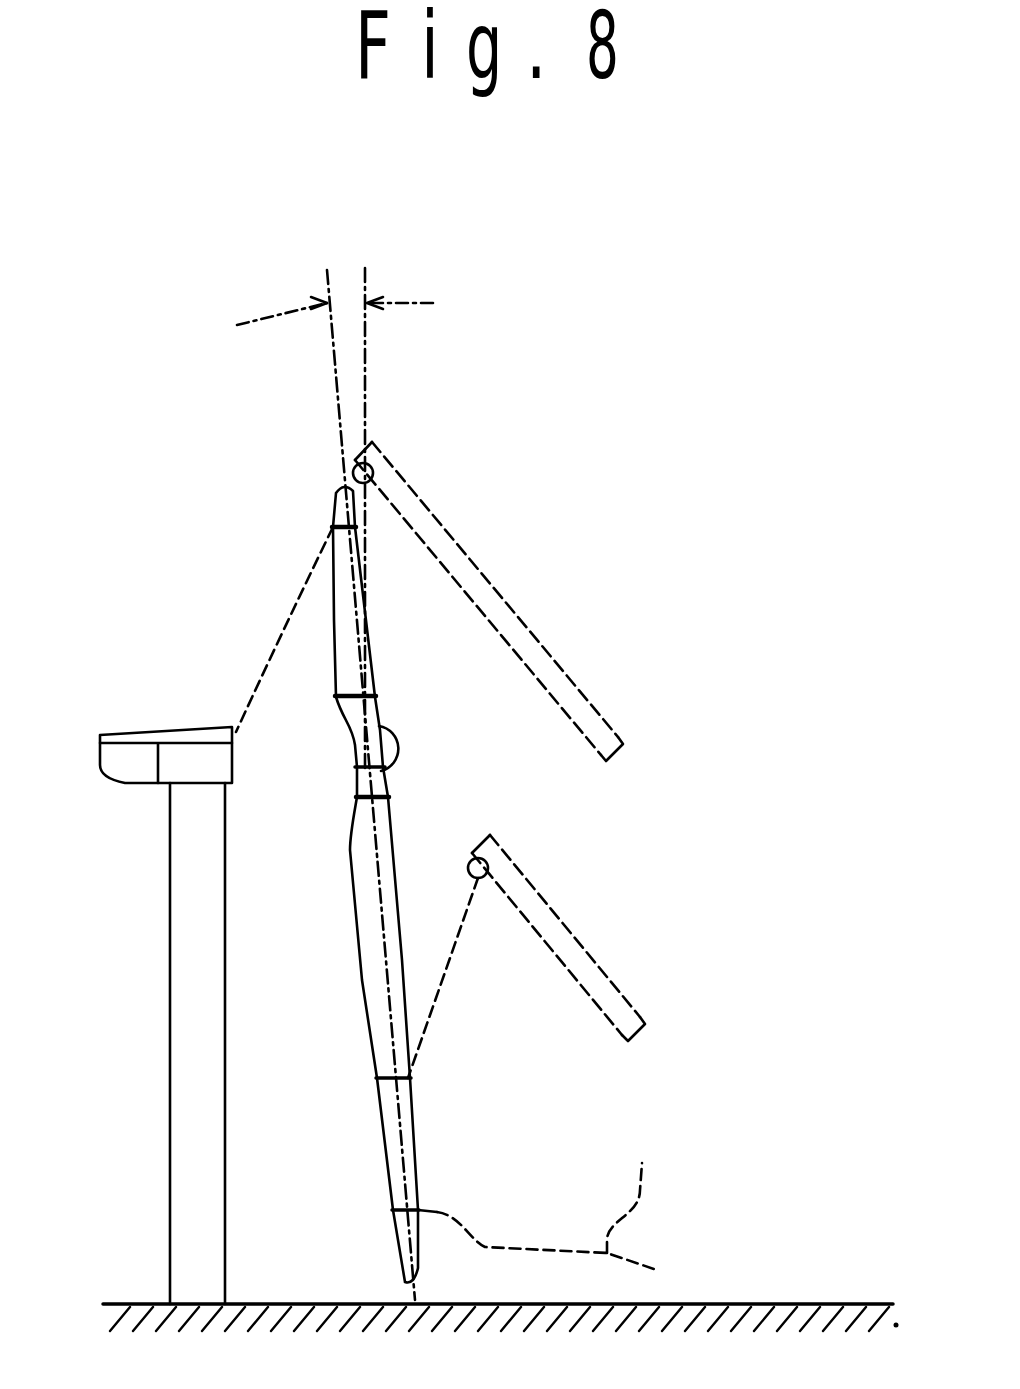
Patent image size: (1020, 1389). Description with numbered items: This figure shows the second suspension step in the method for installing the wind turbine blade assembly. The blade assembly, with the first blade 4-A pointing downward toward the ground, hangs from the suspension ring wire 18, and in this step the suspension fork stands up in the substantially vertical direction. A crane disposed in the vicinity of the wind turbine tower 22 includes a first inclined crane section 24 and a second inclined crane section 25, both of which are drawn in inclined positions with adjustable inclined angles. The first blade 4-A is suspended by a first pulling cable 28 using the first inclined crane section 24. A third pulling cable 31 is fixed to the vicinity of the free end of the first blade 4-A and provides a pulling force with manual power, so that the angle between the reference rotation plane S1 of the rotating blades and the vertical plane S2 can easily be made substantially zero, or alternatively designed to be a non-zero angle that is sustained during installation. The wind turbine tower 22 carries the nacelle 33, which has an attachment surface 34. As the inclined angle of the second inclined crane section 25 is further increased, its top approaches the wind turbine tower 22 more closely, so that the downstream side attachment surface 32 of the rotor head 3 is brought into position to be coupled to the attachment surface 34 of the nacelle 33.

The rotor head 3 is at (405, 750).
The first blade 4-A is at (380, 975).
The suspension ring wire 18 is at (365, 535).
The wind turbine tower 22 is at (192, 1043).
The first inclined crane section 24 is at (603, 968).
The second inclined crane section 25 is at (487, 575).
The first pulling cable 28 is at (447, 1003).
The third pulling cable 31 is at (540, 1196).
The downstream side attachment surface 32 is at (360, 782).
The nacelle 33 is at (192, 748).
The attachment surface 34 is at (237, 747).
The reference rotation plane S1 is at (333, 358).
The vertical plane S2 is at (367, 355).